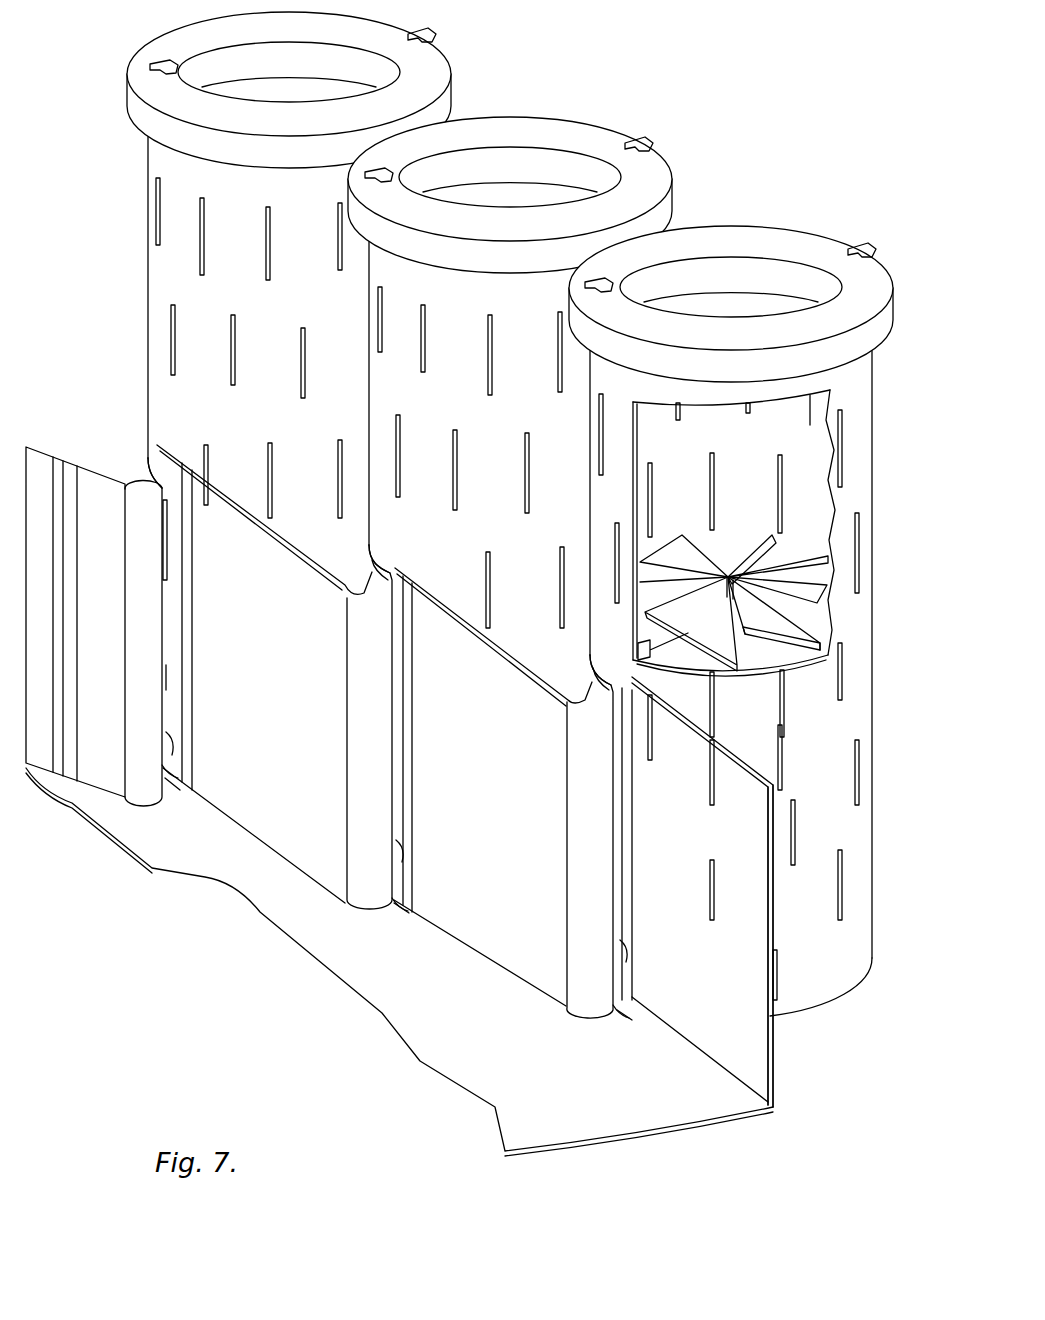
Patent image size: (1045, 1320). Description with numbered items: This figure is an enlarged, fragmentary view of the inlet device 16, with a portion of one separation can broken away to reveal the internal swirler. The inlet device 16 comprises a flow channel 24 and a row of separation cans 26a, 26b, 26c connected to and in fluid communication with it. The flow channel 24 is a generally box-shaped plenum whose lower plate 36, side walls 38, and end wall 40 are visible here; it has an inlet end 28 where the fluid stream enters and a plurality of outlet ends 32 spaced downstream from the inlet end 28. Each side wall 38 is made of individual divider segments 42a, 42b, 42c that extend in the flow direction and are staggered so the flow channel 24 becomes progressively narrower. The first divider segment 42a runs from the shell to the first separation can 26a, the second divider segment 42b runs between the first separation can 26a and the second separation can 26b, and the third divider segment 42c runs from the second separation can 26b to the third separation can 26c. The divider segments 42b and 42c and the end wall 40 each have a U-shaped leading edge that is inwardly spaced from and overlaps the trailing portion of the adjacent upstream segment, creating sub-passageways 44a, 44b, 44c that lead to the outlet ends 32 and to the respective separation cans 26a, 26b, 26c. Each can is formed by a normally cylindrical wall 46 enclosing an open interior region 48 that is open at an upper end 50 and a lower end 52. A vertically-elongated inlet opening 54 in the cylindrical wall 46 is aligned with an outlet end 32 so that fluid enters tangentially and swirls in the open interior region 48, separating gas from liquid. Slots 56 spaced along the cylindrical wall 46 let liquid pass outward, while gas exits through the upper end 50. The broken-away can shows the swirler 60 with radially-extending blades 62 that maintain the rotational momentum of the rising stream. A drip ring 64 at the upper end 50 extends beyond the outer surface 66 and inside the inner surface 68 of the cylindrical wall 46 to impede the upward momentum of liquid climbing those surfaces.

The inlet device 16 is at (477, 606).
The flow channel 24 is at (401, 989).
The first separation can 26a is at (753, 591).
The second separation can 26b is at (674, 152).
The third separation can 26c is at (144, 191).
The inlet end 28 is at (568, 1138).
The outlet ends 32 is at (170, 773).
The lower plate 36 is at (690, 1126).
The side walls 38 is at (774, 1044).
The end wall 40 is at (114, 476).
The first divider segment 42a is at (725, 840).
The second divider segment 42b is at (515, 720).
The third divider segment 42c is at (285, 609).
The first sub-passageway 44a is at (633, 1014).
The second sub-passageway 44b is at (408, 902).
The third sub-passageway 44c is at (183, 793).
The cylindrical wall 46 is at (865, 402).
The open interior region 48 is at (732, 304).
The upper end 50 is at (780, 280).
The lower end 52 is at (173, 743).
The inlet opening 54 is at (393, 572).
The slots 56 is at (858, 548).
The swirler 60 is at (730, 554).
The blades 62 is at (790, 637).
The drip ring 64 is at (884, 326).
The outer surface 66 is at (850, 497).
The inner surface 68 is at (820, 440).